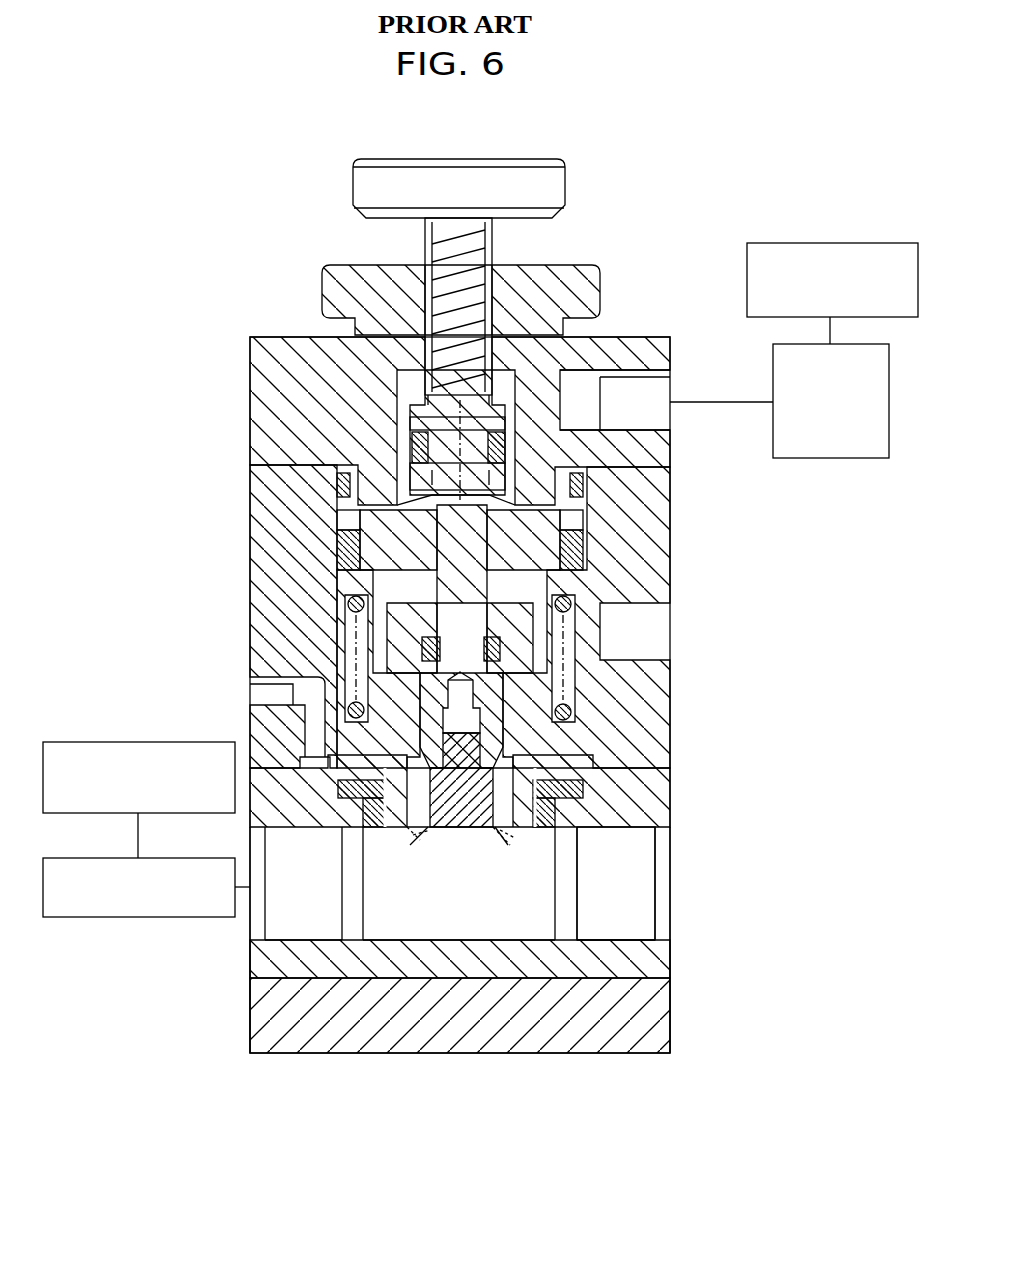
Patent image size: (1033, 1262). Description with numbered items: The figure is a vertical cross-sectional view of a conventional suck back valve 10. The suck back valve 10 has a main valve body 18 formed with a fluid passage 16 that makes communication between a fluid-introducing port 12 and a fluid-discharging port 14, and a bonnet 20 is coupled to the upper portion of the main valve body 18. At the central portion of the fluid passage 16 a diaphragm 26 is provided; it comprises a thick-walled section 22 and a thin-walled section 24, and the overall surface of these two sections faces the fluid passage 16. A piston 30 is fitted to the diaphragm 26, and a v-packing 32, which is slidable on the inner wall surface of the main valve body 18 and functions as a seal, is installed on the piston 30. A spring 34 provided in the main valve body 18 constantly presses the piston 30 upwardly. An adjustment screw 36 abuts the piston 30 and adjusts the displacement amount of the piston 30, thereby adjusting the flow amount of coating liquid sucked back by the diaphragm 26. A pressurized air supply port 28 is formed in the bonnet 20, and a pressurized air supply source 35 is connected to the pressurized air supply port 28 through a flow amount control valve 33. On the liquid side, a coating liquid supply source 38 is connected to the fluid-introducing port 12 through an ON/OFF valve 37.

The suck back valve 10 is at (686, 236).
The fluid-introducing port 12 is at (282, 923).
The fluid-discharging port 14 is at (628, 893).
The fluid passage 16 is at (399, 932).
The main valve body 18 is at (676, 788).
The bonnet 20 is at (673, 339).
The thick-walled section 22 is at (459, 838).
The thin-walled section 24 is at (410, 838).
The diaphragm 26 is at (505, 846).
The pressurized air supply port 28 is at (648, 425).
The piston 30 is at (598, 577).
The v-packing 32 is at (340, 562).
The flow amount control valve 33 is at (855, 458).
The spring 34 is at (572, 712).
The pressurized air supply source 35 is at (868, 243).
The adjustment screw 36 is at (500, 227).
The ON/OFF valve 37 is at (190, 858).
The coating liquid supply source 38 is at (186, 742).